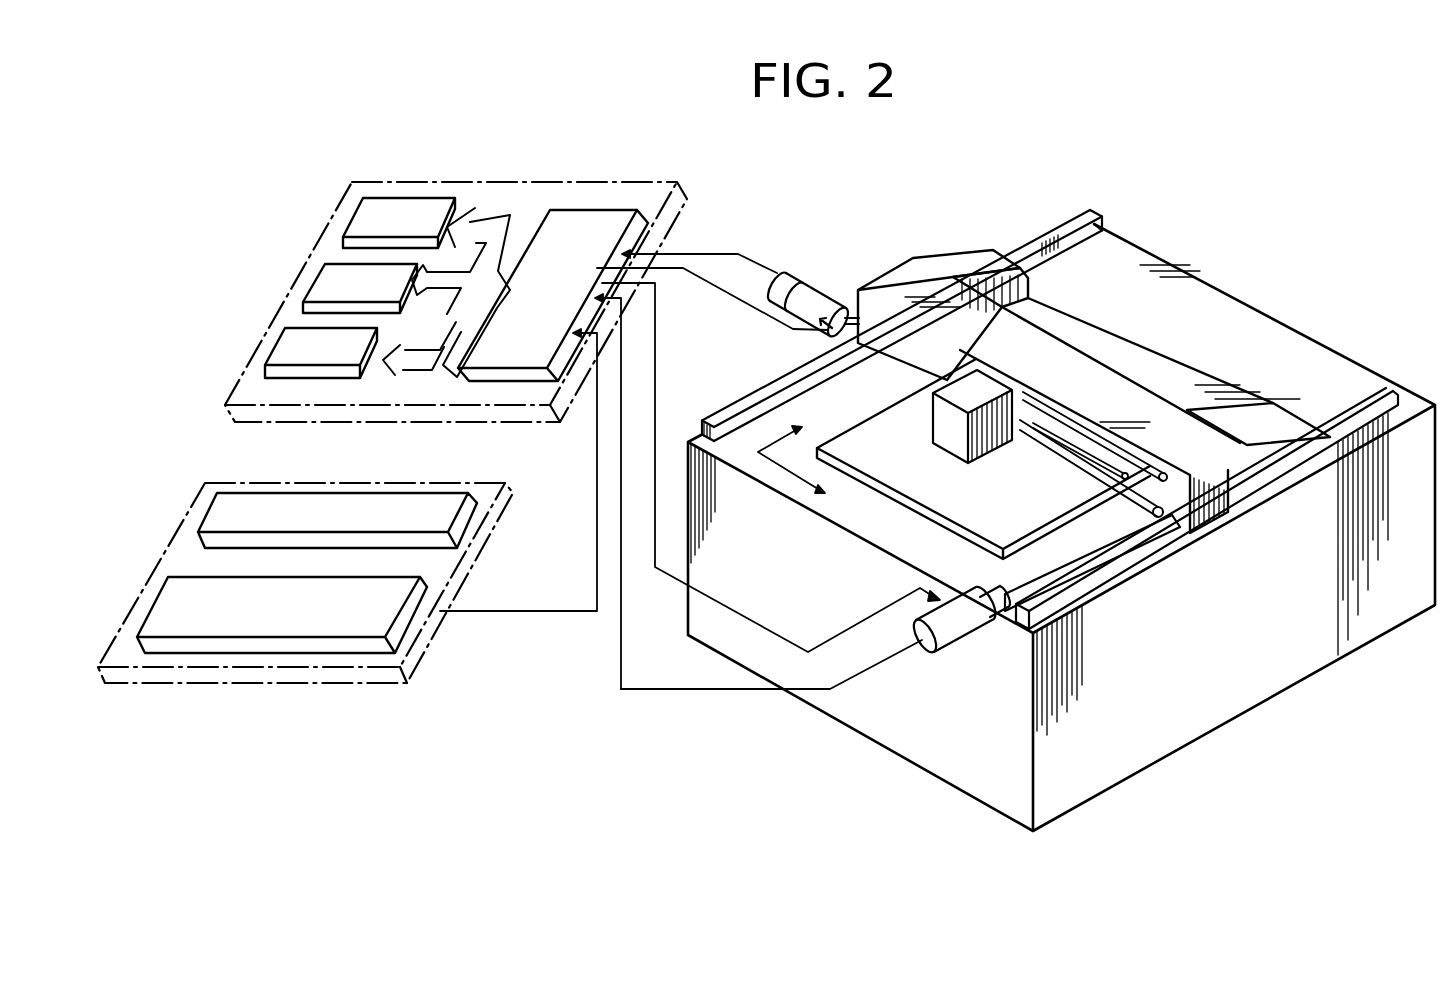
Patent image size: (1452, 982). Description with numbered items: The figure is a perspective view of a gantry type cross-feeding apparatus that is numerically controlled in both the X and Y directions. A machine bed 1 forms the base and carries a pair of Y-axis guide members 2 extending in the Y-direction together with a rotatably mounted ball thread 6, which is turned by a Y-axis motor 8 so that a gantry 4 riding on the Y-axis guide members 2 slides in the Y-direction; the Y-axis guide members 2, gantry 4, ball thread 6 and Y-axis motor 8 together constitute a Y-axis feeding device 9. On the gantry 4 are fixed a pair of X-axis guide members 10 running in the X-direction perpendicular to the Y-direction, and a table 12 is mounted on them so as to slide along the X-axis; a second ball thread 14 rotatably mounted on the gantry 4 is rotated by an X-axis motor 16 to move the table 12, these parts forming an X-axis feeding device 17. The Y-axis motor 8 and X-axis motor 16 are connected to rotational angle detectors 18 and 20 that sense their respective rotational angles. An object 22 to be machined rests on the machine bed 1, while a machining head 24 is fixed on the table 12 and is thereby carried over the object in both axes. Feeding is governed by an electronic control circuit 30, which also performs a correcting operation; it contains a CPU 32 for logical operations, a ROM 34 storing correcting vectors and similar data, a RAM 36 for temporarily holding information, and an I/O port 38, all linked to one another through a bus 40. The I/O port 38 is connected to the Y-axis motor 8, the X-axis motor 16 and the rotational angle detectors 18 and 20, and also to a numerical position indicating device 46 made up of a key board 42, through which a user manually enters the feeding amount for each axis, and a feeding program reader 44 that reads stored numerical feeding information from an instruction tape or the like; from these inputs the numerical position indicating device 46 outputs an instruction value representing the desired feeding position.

The machine bed 1 is at (996, 778).
The Y-axis guide members 2 is at (757, 410).
The gantry 4 is at (908, 272).
The ball thread 6 is at (1087, 600).
The Y-axis motor 8 is at (985, 622).
The Y-axis feeding device 9 is at (996, 638).
The X-axis guide members 10 is at (1133, 447).
The table 12 is at (1010, 378).
The ball thread 14 is at (913, 353).
The X-axis motor 16 is at (815, 290).
The X-axis feeding device 17 is at (842, 285).
The rotational angle detector 18 is at (924, 640).
The rotational angle detector 20 is at (783, 272).
The object to be machined 22 is at (913, 477).
The machining head 24 is at (1014, 445).
The electronic control circuit 30 is at (515, 182).
The CPU 32 is at (420, 198).
The ROM 34 is at (313, 280).
The RAM 36 is at (275, 350).
The I/O port 38 is at (617, 210).
The bus 40 is at (438, 342).
The key board 42 is at (213, 538).
The feeding program reader 44 is at (303, 643).
The numerical position indicating device 46 is at (423, 660).